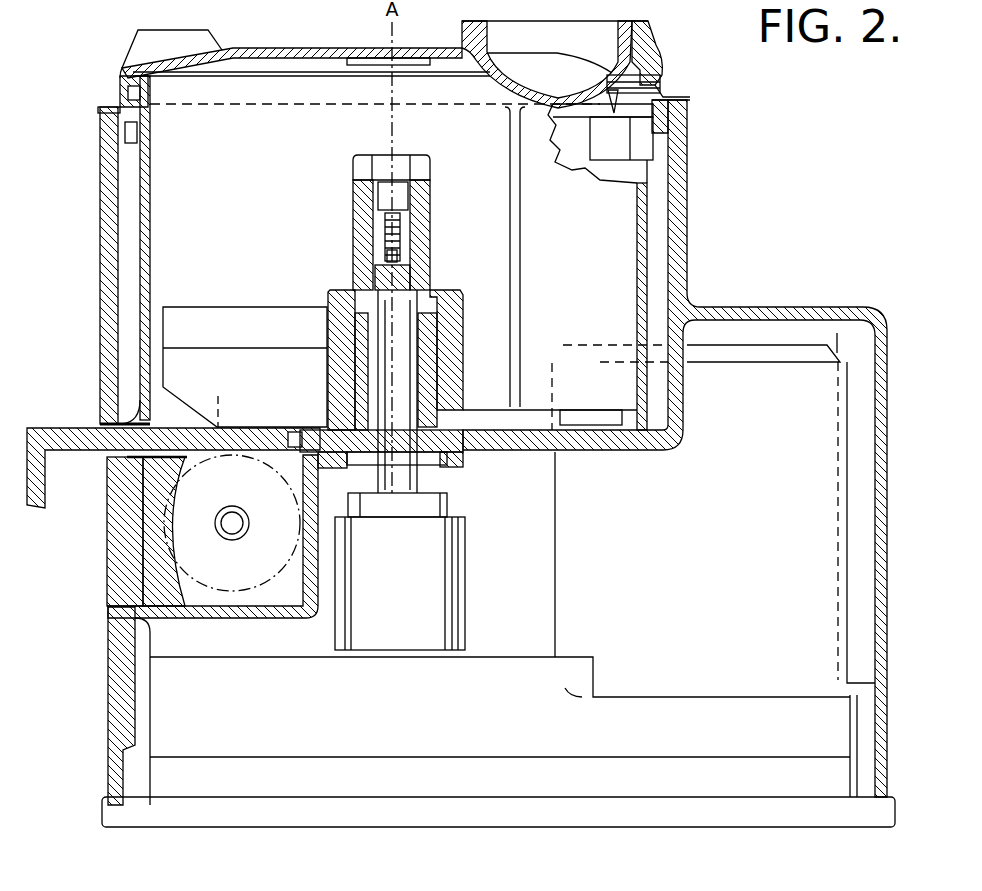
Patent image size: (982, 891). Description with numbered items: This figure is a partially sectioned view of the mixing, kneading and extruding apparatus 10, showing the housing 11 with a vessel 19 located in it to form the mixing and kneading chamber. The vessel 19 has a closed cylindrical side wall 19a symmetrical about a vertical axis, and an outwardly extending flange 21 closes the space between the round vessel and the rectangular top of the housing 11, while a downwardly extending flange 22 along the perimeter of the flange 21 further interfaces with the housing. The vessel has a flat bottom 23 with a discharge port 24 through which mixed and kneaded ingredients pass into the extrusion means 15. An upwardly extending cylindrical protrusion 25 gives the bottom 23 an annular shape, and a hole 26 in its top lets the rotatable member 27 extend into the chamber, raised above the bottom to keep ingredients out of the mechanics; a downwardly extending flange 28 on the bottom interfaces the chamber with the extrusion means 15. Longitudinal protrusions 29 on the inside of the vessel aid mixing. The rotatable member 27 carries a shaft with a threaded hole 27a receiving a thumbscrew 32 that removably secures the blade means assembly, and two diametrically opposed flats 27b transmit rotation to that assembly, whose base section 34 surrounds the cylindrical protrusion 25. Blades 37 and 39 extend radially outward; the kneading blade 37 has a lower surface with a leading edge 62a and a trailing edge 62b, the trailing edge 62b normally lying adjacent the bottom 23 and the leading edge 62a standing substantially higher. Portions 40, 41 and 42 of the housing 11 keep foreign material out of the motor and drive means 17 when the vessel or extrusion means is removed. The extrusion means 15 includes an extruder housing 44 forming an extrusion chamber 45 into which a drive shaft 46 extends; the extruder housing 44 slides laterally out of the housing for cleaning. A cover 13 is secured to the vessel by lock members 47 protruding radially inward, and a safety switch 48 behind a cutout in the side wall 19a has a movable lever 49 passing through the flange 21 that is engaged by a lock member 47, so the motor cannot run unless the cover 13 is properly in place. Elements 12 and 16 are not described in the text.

The apparatus 10 is at (700, 236).
The housing 11 is at (100, 208).
The base plate 12 is at (192, 825).
The cover 13 is at (318, 46).
The extrusion means 15 is at (140, 604).
The handle plate 16 is at (58, 428).
The motor and drive means 17 is at (700, 553).
The vessel 19 is at (138, 162).
The side wall 19a is at (638, 244).
The flange 21 is at (118, 110).
The downwardly extending flange 22 is at (126, 134).
The flat bottom 23 is at (628, 420).
The discharge port 24 is at (215, 400).
The cylindrical protrusion 25 is at (432, 340).
The hole 26 is at (440, 305).
The rotatable member 27 is at (415, 290).
The threaded hole 27a is at (390, 250).
The flats 27b is at (380, 226).
The downwardly extending flange 28 is at (328, 465).
The longitudinal protrusions 29 is at (520, 183).
The thumbscrew 32 is at (428, 160).
The section 34 is at (445, 360).
The kneading blade 37 is at (246, 322).
The blade 39 is at (560, 450).
The portion of the housing 40 is at (230, 614).
The portion of the housing 41 is at (315, 548).
The portion of the housing 42 is at (512, 447).
The extruder housing 44 is at (150, 568).
The extrusion chamber 45 is at (172, 518).
The drive shaft 46 is at (228, 512).
The lock members 47 is at (130, 92).
The safety switch 48 is at (620, 143).
The movable lever 49 is at (640, 80).
The leading edge 62a is at (290, 352).
The trailing edge 62b is at (295, 428).